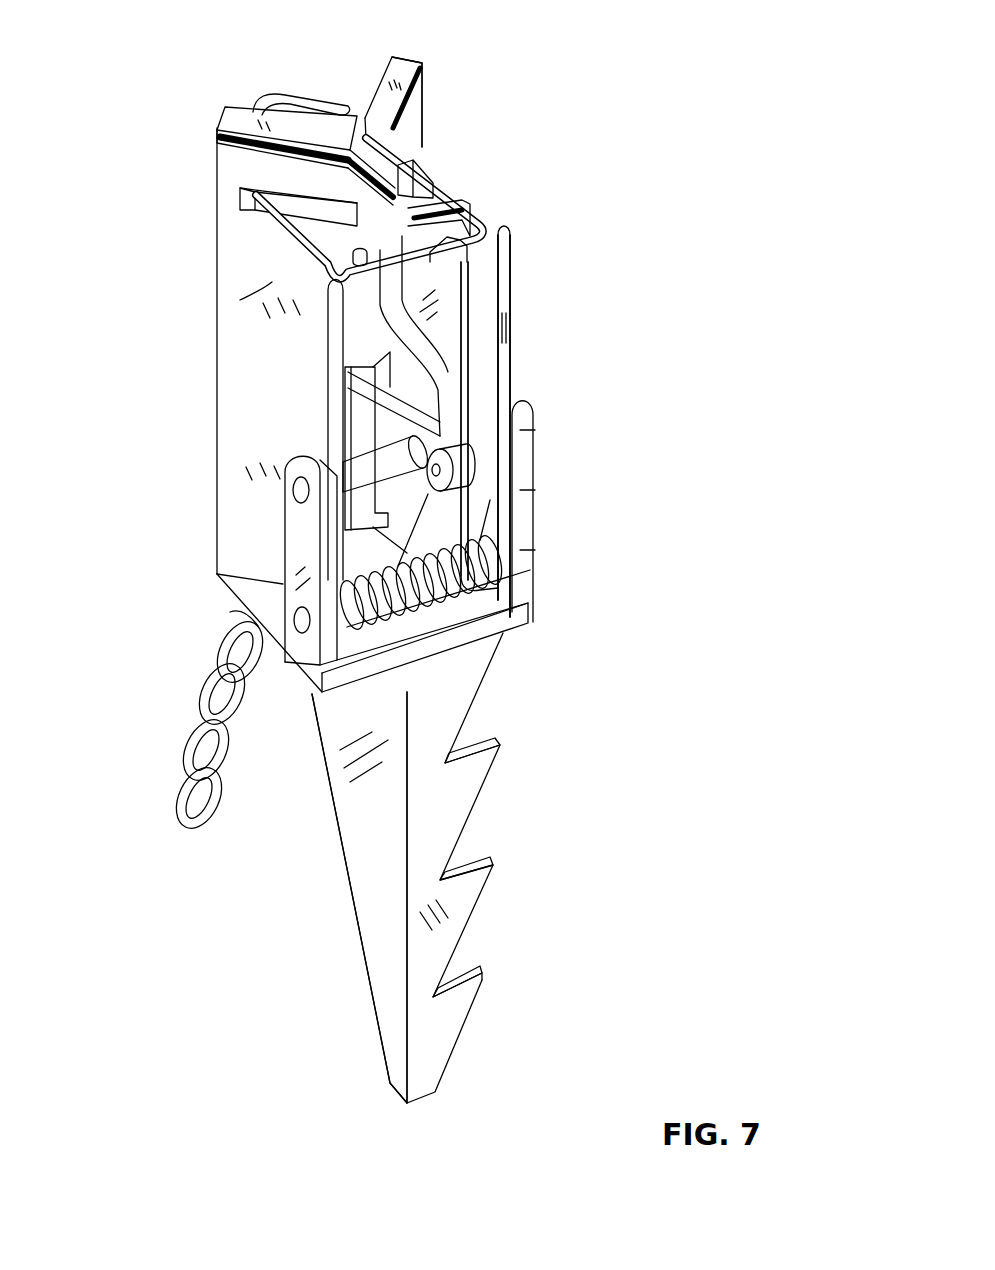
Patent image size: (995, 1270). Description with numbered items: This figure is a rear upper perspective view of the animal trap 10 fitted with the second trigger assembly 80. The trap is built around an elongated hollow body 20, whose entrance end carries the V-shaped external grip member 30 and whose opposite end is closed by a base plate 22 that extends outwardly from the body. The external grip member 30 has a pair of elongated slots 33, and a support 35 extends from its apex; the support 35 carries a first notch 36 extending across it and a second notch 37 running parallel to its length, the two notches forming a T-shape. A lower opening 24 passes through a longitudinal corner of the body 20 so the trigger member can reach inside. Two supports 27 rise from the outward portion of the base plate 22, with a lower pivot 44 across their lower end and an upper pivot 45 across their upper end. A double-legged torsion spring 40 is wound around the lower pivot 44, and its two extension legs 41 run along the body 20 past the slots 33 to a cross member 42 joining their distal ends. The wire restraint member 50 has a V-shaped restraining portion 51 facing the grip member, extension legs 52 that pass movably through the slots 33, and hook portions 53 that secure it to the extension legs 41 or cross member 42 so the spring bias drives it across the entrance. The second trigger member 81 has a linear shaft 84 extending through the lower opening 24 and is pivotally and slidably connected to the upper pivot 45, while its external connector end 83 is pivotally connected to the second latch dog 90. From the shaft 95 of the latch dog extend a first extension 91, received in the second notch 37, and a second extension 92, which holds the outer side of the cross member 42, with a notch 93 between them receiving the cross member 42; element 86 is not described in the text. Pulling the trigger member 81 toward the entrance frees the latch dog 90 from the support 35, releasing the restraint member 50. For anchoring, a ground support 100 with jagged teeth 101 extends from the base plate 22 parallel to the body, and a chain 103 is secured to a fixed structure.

The animal trap 10 is at (598, 62).
The hollow body 20 is at (258, 332).
The base plate 22 is at (236, 584).
The lower opening 24 is at (530, 640).
The supports 27 is at (292, 540).
The external grip member 30 is at (400, 62).
The elongated slots 33 is at (417, 130).
The support 35 is at (222, 152).
The first notch 36 is at (248, 300).
The second notch 37 is at (352, 258).
The torsion spring 40 is at (468, 598).
The extension legs 41 is at (347, 417).
The cross member 42 is at (330, 365).
The lower pivot 44 is at (305, 628).
The upper pivot 45 is at (298, 492).
The restraint member 50 is at (474, 196).
The restraining portion 51 is at (262, 102).
The extension legs 52 is at (428, 163).
The hook portions 53 is at (488, 232).
The second trigger assembly 80 is at (488, 369).
The second trigger member 81 is at (340, 476).
The connector end 83 is at (430, 494).
The shaft 84 is at (350, 462).
The knob 86 is at (468, 466).
The second latch dog 90 is at (477, 352).
The first extension 91 is at (372, 125).
The second extension 92 is at (468, 266).
The notch 93 is at (500, 302).
The shaft 95 is at (450, 420).
The ground support 100 is at (378, 918).
The jagged teeth 101 is at (484, 977).
The chain 103 is at (190, 830).